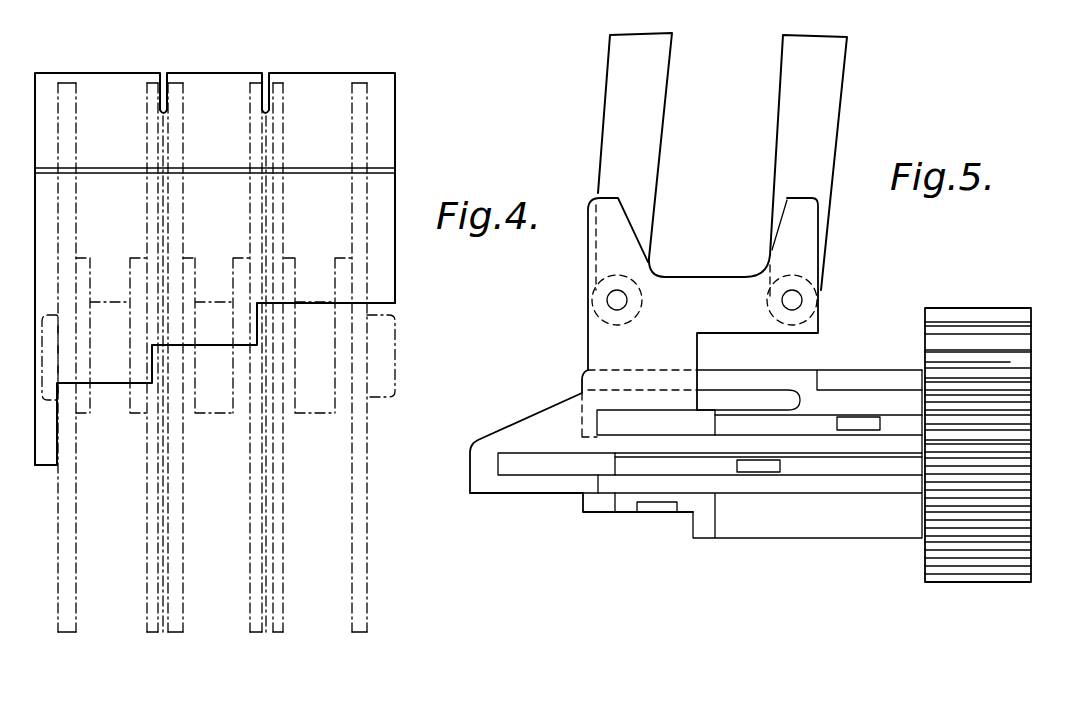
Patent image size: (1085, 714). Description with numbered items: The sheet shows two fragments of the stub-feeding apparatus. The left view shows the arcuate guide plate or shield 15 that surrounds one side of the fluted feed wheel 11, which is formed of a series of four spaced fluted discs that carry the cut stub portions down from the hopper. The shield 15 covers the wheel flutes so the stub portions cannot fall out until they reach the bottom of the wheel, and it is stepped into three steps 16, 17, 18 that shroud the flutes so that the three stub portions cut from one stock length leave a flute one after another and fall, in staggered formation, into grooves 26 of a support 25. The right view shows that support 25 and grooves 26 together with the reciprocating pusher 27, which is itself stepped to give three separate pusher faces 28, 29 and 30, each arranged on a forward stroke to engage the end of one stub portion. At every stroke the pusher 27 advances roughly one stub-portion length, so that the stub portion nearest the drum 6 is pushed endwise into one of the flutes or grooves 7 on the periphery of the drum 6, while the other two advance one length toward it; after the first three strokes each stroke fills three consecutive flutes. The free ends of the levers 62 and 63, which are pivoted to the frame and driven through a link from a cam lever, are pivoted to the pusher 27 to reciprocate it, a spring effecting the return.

In FIG. 4, the fluted feed wheel 11 is at (268, 640).
In FIG. 4, the arcuate guide plate or shield 15 is at (386, 114).
In FIG. 4, the step of shield 16 is at (318, 300).
In FIG. 4, the step of shield 17 is at (218, 345).
In FIG. 4, the step of shield 18 is at (112, 383).
In FIG. 5, the drum 6 is at (1033, 336).
In FIG. 5, the flutes or grooves 7 is at (1022, 485).
In FIG. 5, the support 25 is at (778, 522).
In FIG. 5, the grooves of support 26 is at (865, 400).
In FIG. 5, the reciprocating pusher 27 is at (578, 340).
In FIG. 5, the pusher face 28 is at (792, 388).
In FIG. 5, the pusher face 29 is at (683, 447).
In FIG. 5, the pusher face 30 is at (597, 490).
In FIG. 5, the lever 62 is at (825, 117).
In FIG. 5, the lever 63 is at (648, 125).